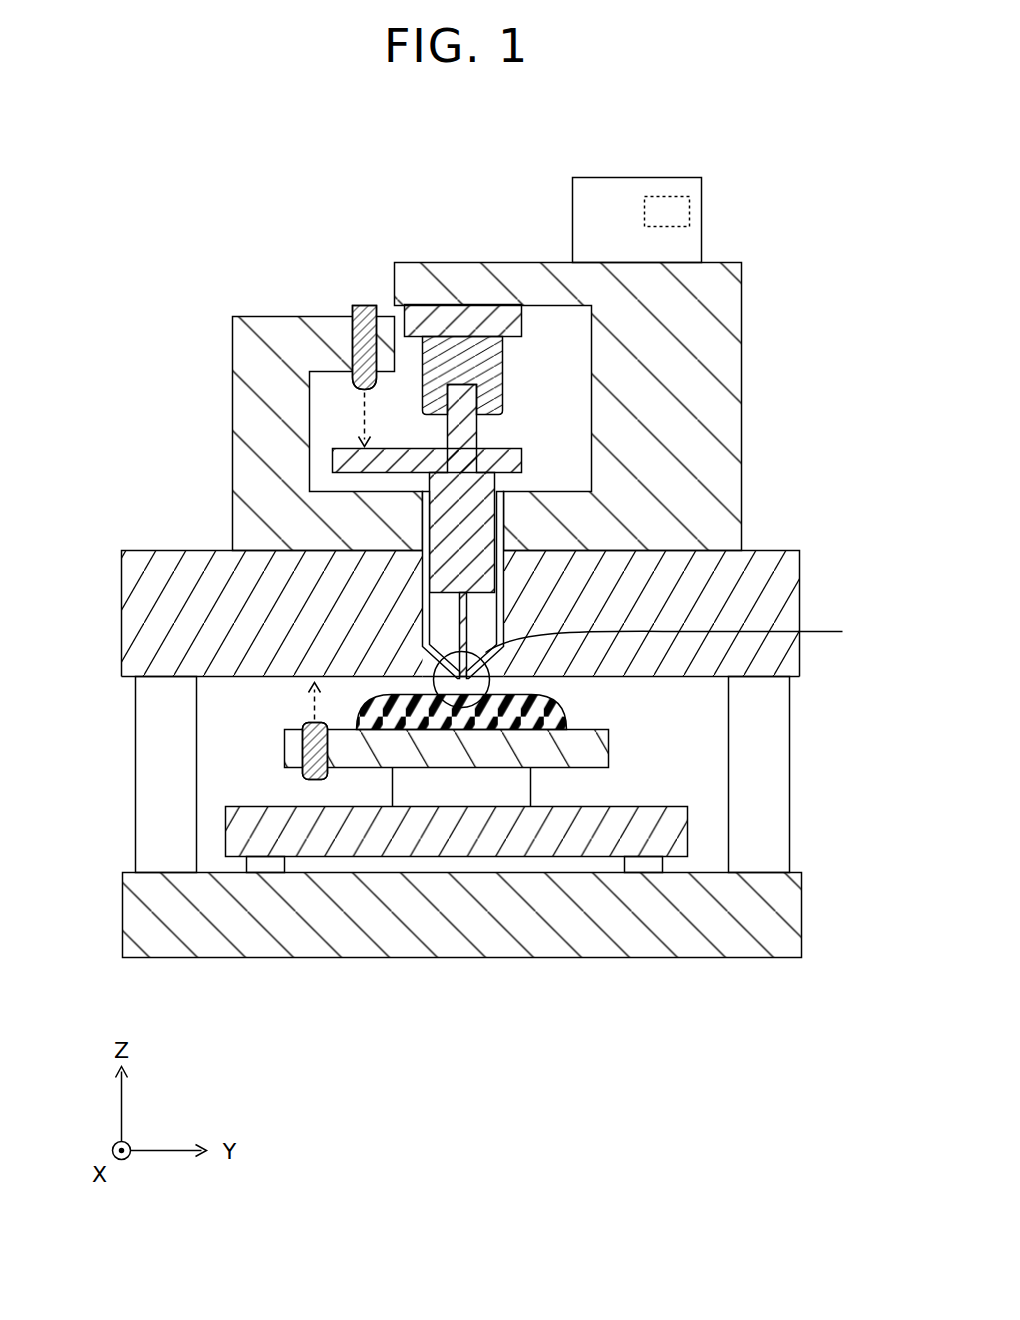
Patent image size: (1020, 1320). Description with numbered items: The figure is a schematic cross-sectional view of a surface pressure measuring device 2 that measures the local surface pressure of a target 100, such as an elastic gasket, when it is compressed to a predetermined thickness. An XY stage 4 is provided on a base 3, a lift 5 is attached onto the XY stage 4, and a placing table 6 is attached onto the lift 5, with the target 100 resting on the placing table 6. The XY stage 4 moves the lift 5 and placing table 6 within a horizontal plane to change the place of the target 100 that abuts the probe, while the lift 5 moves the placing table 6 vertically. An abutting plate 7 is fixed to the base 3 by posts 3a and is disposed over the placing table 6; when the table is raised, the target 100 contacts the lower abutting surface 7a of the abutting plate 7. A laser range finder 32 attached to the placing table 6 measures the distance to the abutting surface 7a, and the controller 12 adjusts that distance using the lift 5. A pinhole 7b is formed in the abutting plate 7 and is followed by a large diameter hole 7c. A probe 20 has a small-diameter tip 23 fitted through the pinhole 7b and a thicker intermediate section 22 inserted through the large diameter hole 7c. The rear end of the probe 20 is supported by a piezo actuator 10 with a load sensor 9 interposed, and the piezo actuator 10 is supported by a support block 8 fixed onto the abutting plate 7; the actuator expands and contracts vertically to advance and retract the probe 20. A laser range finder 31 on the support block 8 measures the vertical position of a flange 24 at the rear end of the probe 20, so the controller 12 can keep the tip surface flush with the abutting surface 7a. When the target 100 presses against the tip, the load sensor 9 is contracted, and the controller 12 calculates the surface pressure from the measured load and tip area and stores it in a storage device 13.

The surface pressure measuring device 2 is at (185, 200).
The base 3 is at (310, 948).
The posts 3a is at (147, 843).
The XY stage 4 is at (227, 813).
The lift 5 is at (531, 792).
The placing table 6 is at (609, 757).
The abutting plate 7 is at (125, 551).
The abutting surface 7a is at (249, 690).
The pinhole 7b is at (488, 690).
The large diameter hole 7c is at (437, 620).
The support block 8 is at (245, 468).
The load sensor 9 is at (503, 363).
The piezo actuator 10 is at (425, 312).
The controller 12 is at (600, 182).
The storage device 13 is at (692, 205).
The probe 20 is at (527, 437).
The intermediate section 22 is at (503, 478).
The tip 23 is at (468, 633).
The flange 24 is at (350, 448).
The laser range finder 31 is at (358, 306).
The laser range finder 32 is at (303, 750).
The target 100 is at (567, 717).